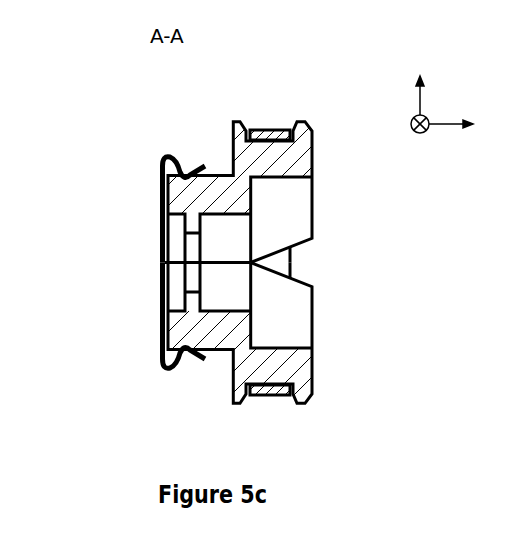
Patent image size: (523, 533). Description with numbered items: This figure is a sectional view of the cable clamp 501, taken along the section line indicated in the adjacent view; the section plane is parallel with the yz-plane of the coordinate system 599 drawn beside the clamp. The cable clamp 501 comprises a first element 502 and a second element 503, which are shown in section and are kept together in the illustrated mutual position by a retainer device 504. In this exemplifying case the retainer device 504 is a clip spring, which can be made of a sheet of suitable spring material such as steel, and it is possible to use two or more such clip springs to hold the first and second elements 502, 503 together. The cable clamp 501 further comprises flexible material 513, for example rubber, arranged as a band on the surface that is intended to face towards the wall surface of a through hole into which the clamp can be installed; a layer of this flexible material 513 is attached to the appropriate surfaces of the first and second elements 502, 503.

The cable clamp 501 is at (155, 106).
The first element 502 is at (233, 150).
The second element 503 is at (233, 382).
The retainer device 504 is at (160, 210).
The flexible material 513 is at (267, 130).
The coordinate system 599 is at (470, 108).